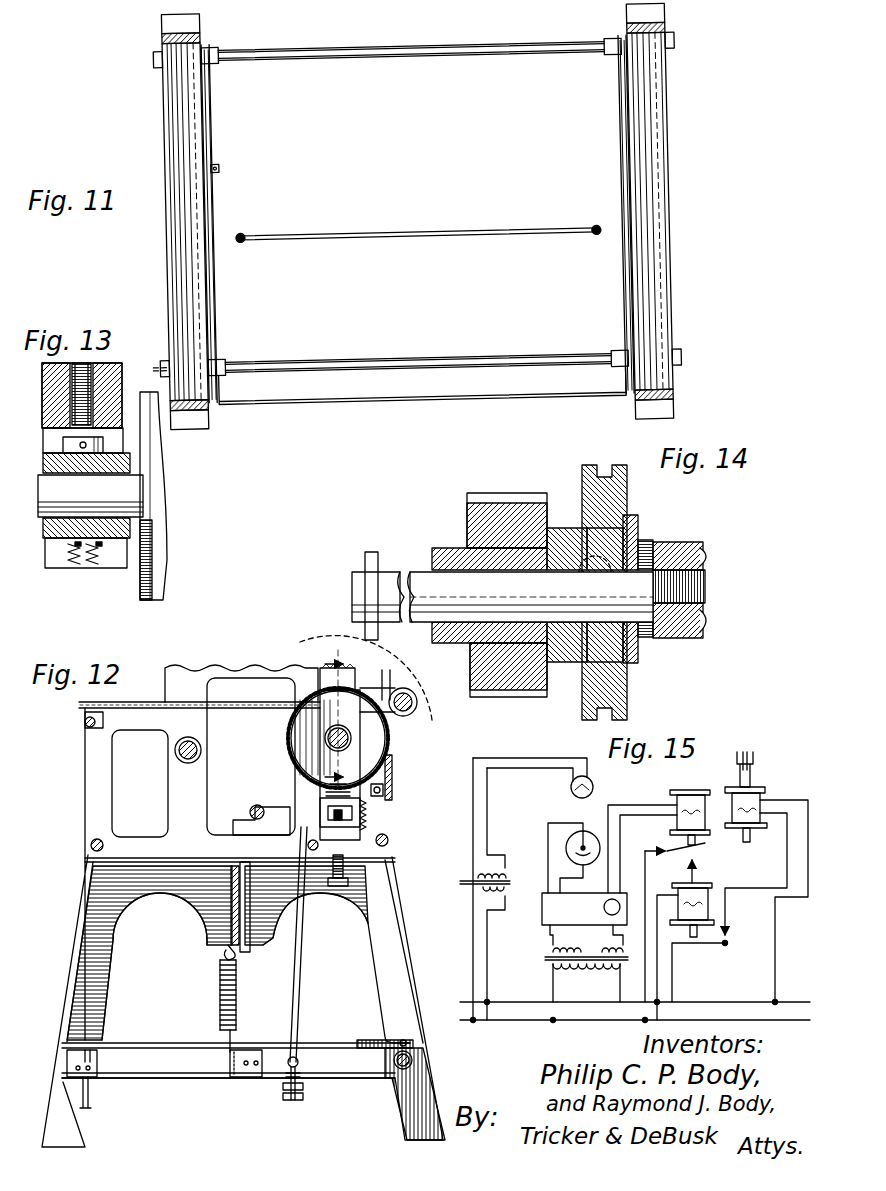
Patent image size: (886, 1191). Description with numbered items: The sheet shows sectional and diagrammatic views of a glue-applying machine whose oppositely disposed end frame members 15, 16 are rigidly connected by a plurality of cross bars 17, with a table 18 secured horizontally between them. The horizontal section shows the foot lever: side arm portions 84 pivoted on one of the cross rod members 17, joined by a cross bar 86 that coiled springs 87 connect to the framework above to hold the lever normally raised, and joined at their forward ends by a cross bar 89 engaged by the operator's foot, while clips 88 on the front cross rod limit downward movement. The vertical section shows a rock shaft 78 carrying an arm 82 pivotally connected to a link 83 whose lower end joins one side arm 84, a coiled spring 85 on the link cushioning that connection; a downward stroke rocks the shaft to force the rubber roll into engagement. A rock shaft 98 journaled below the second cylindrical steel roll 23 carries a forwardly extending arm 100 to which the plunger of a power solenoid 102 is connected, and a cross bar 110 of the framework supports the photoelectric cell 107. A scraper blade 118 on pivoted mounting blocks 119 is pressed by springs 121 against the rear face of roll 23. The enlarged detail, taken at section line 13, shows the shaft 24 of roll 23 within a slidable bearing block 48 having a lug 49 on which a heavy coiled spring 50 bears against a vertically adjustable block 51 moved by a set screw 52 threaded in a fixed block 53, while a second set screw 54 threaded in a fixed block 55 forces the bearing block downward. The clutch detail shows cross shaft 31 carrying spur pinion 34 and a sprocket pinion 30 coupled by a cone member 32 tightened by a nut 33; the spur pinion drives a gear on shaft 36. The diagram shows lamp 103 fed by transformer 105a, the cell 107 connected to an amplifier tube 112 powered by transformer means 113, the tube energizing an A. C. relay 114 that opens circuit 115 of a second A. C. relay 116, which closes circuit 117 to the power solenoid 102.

In FIG. 12, the section line 13- 13 is at (343, 716).
In FIG. 11, the end frame member 15 is at (172, 148).
In FIG. 11, the end frame member 16 is at (672, 258).
In FIG. 11, the cross bars 17 is at (470, 56).
In FIG. 12, the cross bars 17 is at (85, 722).
In FIG. 12, the table 18 is at (245, 700).
In FIG. 13, the second cylindrical steel roll 23 is at (160, 540).
In FIG. 12, the second cylindrical steel roll 23 is at (292, 752).
In FIG. 13, the shaft 24 is at (130, 504).
In FIG. 12, the shaft 24 is at (352, 740).
In FIG. 14, the sprocket pinion 30 is at (628, 490).
In FIG. 14, the cross shaft 31 is at (456, 585).
In FIG. 12, the cross shaft 31 is at (248, 812).
In FIG. 14, the cone member 32 is at (640, 656).
In FIG. 14, the nut 33 is at (696, 638).
In FIG. 14, the spur pinion 34 is at (510, 500).
In FIG. 12, the shaft 36 is at (175, 752).
In FIG. 13, the bearing blocks 48 is at (132, 462).
In FIG. 12, the bearing blocks 48 is at (405, 728).
In FIG. 13, the lug 49 is at (76, 560).
In FIG. 13, the coiled spring 50 is at (94, 560).
In FIG. 12, the coiled spring 50 is at (324, 792).
In FIG. 12, the vertically adjustable block 51 is at (352, 812).
In FIG. 12, the set screw 52 is at (302, 875).
In FIG. 12, the fixed block 53 is at (345, 862).
In FIG. 13, the second set screw 54 is at (92, 412).
In FIG. 13, the fixed block 55 is at (112, 372).
In FIG. 12, the fixed block 55 is at (358, 680).
In FIG. 12, the rock shaft 78 is at (416, 702).
In FIG. 12, the arm 82 is at (392, 690).
In FIG. 11, the link 83 is at (218, 160).
In FIG. 12, the link 83 is at (302, 958).
In FIG. 11, the side arm portions 84 is at (216, 298).
In FIG. 12, the side arm portions 84 is at (172, 1082).
In FIG. 12, the coiled spring 85 is at (300, 1082).
In FIG. 11, the cross bar 86 is at (372, 240).
In FIG. 12, the cross bar 86 is at (248, 1080).
In FIG. 11, the coiled springs 87 is at (243, 230).
In FIG. 12, the coiled springs 87 is at (218, 990).
In FIG. 12, the clips 88 is at (86, 1108).
In FIG. 11, the cross bar 89 is at (310, 400).
In FIG. 12, the cross bar 89 is at (68, 1062).
In FIG. 12, the rock shaft 98 is at (309, 845).
In FIG. 15, the arm 100 is at (742, 756).
In FIG. 15, the power solenoid 102 is at (758, 800).
In FIG. 15, the lamp 103 is at (571, 787).
In FIG. 15, the transformer 105a is at (488, 888).
In FIG. 15, the photoelectric cell 107 is at (594, 832).
In FIG. 12, the cross bar 110 is at (205, 922).
In FIG. 15, the amplifier tube 112 is at (614, 900).
In FIG. 15, the transformer means 113 is at (553, 957).
In FIG. 15, the A. C. relay 114 is at (676, 822).
In FIG. 15, the circuit 115 is at (650, 880).
In FIG. 15, the A. C. relay 116 is at (694, 882).
In FIG. 15, the circuit 117 is at (782, 902).
In FIG. 12, the scraper blade 118 is at (392, 776).
In FIG. 12, the mounting blocks 119 is at (384, 790).
In FIG. 12, the springs 121 is at (368, 825).